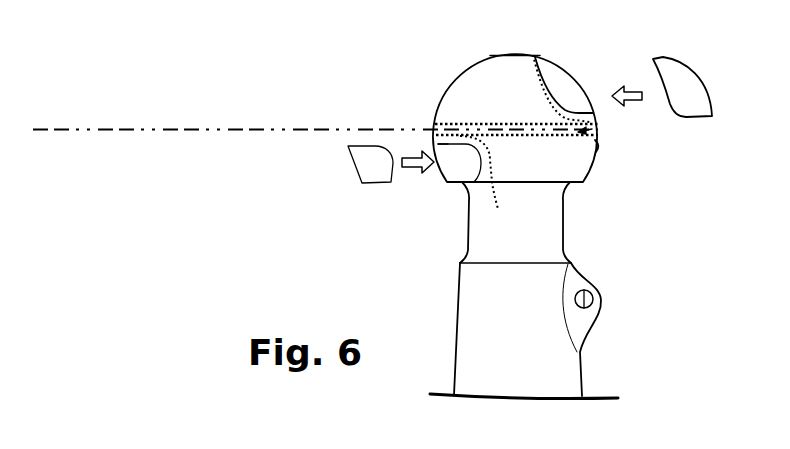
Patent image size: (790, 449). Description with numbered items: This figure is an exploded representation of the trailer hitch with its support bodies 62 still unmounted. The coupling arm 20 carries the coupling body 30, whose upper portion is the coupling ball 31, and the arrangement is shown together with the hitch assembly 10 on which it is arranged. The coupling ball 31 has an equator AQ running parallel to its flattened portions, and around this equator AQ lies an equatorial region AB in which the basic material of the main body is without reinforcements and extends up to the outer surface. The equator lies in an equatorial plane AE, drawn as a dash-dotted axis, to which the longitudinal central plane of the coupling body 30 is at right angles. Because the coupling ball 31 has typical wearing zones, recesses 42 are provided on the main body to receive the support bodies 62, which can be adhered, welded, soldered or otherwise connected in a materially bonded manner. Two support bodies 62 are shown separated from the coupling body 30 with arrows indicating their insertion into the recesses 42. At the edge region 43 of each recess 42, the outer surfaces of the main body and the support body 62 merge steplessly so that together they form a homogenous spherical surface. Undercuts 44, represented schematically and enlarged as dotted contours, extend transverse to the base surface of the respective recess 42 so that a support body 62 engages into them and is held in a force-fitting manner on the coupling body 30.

The bottle / container body 10 is at (584, 273).
The coupling arm 20 is at (449, 325).
The coupling body 30 is at (457, 73).
The coupling ball 31 is at (498, 60).
The recess 42 is at (567, 79).
The edge region 43 is at (445, 140).
The undercut 44 is at (535, 55).
The support body 62 is at (360, 157).
The equatorial plane AE is at (172, 129).
The equatorial region AB is at (598, 125).
The equator AQ is at (599, 150).